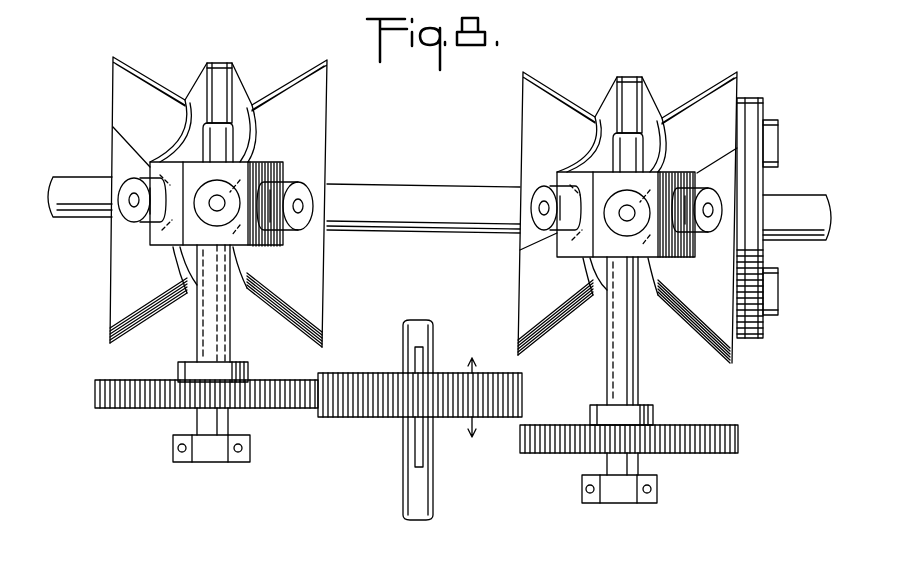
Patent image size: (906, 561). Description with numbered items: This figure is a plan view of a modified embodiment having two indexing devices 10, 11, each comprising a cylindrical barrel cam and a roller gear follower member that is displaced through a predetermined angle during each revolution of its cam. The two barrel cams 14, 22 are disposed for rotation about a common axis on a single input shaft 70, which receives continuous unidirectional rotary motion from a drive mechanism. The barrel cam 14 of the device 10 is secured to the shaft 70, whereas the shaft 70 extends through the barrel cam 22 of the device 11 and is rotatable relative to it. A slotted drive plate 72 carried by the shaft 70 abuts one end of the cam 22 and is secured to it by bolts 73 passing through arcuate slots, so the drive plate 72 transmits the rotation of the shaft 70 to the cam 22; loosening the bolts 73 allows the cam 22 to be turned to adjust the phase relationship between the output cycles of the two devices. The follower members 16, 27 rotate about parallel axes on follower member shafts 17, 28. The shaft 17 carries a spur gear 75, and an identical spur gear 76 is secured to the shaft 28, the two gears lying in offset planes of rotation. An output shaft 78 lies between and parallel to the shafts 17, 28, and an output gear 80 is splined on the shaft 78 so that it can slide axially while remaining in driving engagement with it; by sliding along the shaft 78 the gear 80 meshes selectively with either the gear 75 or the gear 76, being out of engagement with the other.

The indexing device 10 is at (210, 255).
The indexing device 11 is at (642, 282).
The barrel cam 14 is at (122, 75).
The follower member 16 is at (275, 250).
The follower member shaft 17 is at (198, 318).
The barrel cam 22 is at (565, 110).
The follower member 27 is at (560, 245).
The follower member shaft 28 is at (625, 378).
The input shaft 70 is at (402, 192).
The slotted drive plate 72 is at (765, 100).
The bolts 73 is at (778, 146).
The spur gear 75 is at (107, 410).
The spur gear 76 is at (693, 445).
The output shaft 78 is at (418, 489).
The output gear 80 is at (372, 388).